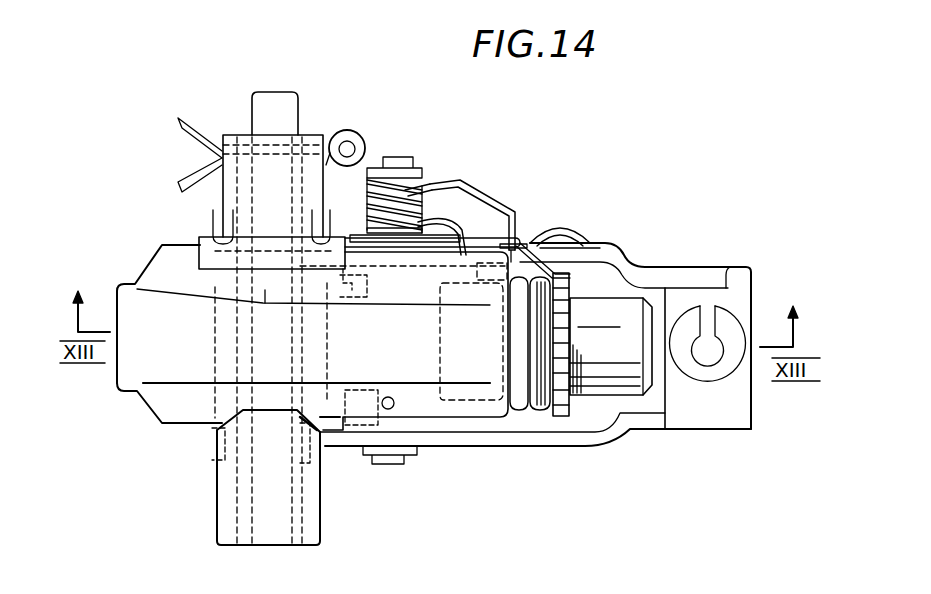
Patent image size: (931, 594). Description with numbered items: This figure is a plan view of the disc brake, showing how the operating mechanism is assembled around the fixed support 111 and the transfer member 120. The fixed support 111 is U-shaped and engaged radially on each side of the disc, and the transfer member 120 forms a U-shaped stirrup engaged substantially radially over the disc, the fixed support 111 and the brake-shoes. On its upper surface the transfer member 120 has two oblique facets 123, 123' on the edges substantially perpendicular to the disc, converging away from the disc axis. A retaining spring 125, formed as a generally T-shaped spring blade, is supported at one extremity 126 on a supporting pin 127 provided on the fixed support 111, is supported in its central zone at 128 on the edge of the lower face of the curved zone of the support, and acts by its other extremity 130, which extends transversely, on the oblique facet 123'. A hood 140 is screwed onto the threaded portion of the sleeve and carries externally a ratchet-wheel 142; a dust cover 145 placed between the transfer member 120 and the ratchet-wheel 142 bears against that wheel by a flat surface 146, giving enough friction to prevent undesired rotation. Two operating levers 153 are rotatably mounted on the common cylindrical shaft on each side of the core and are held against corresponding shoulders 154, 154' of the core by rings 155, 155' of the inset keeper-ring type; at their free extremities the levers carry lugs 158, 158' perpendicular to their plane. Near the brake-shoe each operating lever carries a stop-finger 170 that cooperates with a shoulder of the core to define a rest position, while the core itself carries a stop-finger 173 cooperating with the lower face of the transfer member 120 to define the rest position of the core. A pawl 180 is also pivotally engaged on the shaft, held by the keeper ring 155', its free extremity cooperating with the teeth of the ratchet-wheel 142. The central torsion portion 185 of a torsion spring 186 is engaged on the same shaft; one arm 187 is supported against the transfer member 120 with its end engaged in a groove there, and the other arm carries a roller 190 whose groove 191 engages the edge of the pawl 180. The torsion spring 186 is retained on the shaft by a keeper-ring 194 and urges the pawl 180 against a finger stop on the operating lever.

The fixed support 111 is at (210, 528).
The transfer member 120 is at (114, 380).
The oblique facet 123 is at (251, 435).
The oblique facet 123' is at (228, 255).
The retaining spring 125 is at (305, 90).
The extremity 126 is at (268, 105).
The supporting pin 127 is at (350, 115).
The central support point 128 is at (213, 238).
The extremity 130 is at (263, 303).
The hood 140 is at (632, 428).
The ratchet-wheel 142 is at (557, 422).
The dust cover 145 is at (569, 284).
The flat surface 146 is at (578, 337).
The operating lever 153 is at (522, 456).
The shoulder 154 is at (492, 389).
The shoulder 154' is at (473, 331).
The ring 155 is at (404, 483).
The keeper ring 155' is at (453, 227).
The lug 158 is at (720, 384).
The lug 158' is at (744, 258).
The stop-finger 170 is at (360, 305).
The stop-finger 173 is at (373, 423).
The pawl 180 is at (495, 226).
The central torsion portion 185 is at (420, 186).
The torsion spring 186 is at (497, 183).
The arm 187 is at (462, 247).
The roller 190 is at (530, 238).
The groove 191 is at (580, 245).
The keeper-ring 194 is at (385, 162).